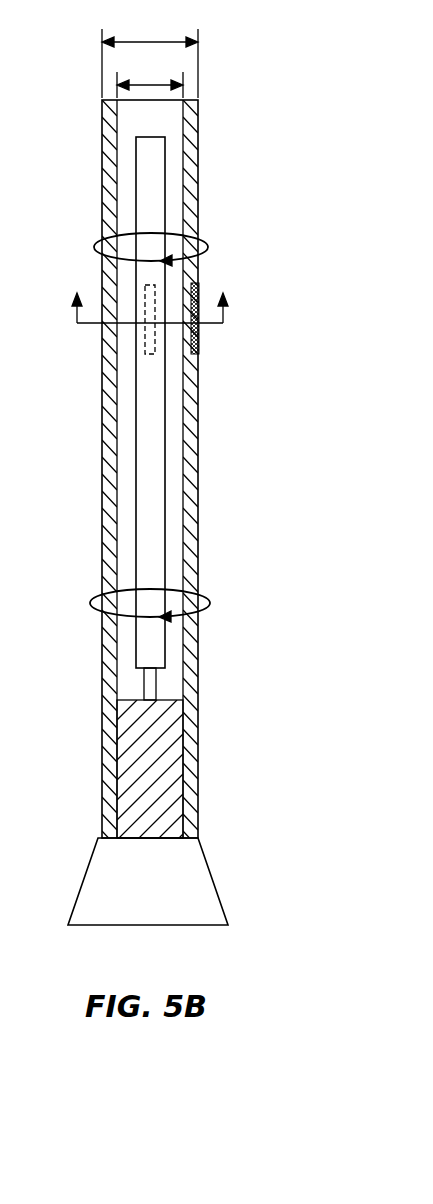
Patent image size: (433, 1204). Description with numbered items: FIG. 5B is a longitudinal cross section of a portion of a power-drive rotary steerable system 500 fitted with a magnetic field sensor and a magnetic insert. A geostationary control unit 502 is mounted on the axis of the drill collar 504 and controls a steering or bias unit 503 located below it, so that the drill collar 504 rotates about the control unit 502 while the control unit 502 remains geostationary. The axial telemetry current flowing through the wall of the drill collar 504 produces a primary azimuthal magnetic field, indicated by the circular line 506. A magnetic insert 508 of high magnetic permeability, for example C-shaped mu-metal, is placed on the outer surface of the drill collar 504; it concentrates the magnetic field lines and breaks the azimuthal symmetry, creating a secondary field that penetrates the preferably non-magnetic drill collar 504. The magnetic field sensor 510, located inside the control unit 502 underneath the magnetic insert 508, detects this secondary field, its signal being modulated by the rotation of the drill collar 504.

The power-drive rotary steerable system 500 is at (158, 469).
The geostationary control unit 502 is at (155, 488).
The steering or bias unit 503 is at (173, 758).
The drill collar 504 is at (108, 488).
The azimuthal magnetic field 506 is at (102, 232).
The magnetic insert 508 is at (198, 333).
The magnetic field sensor 510 is at (152, 334).